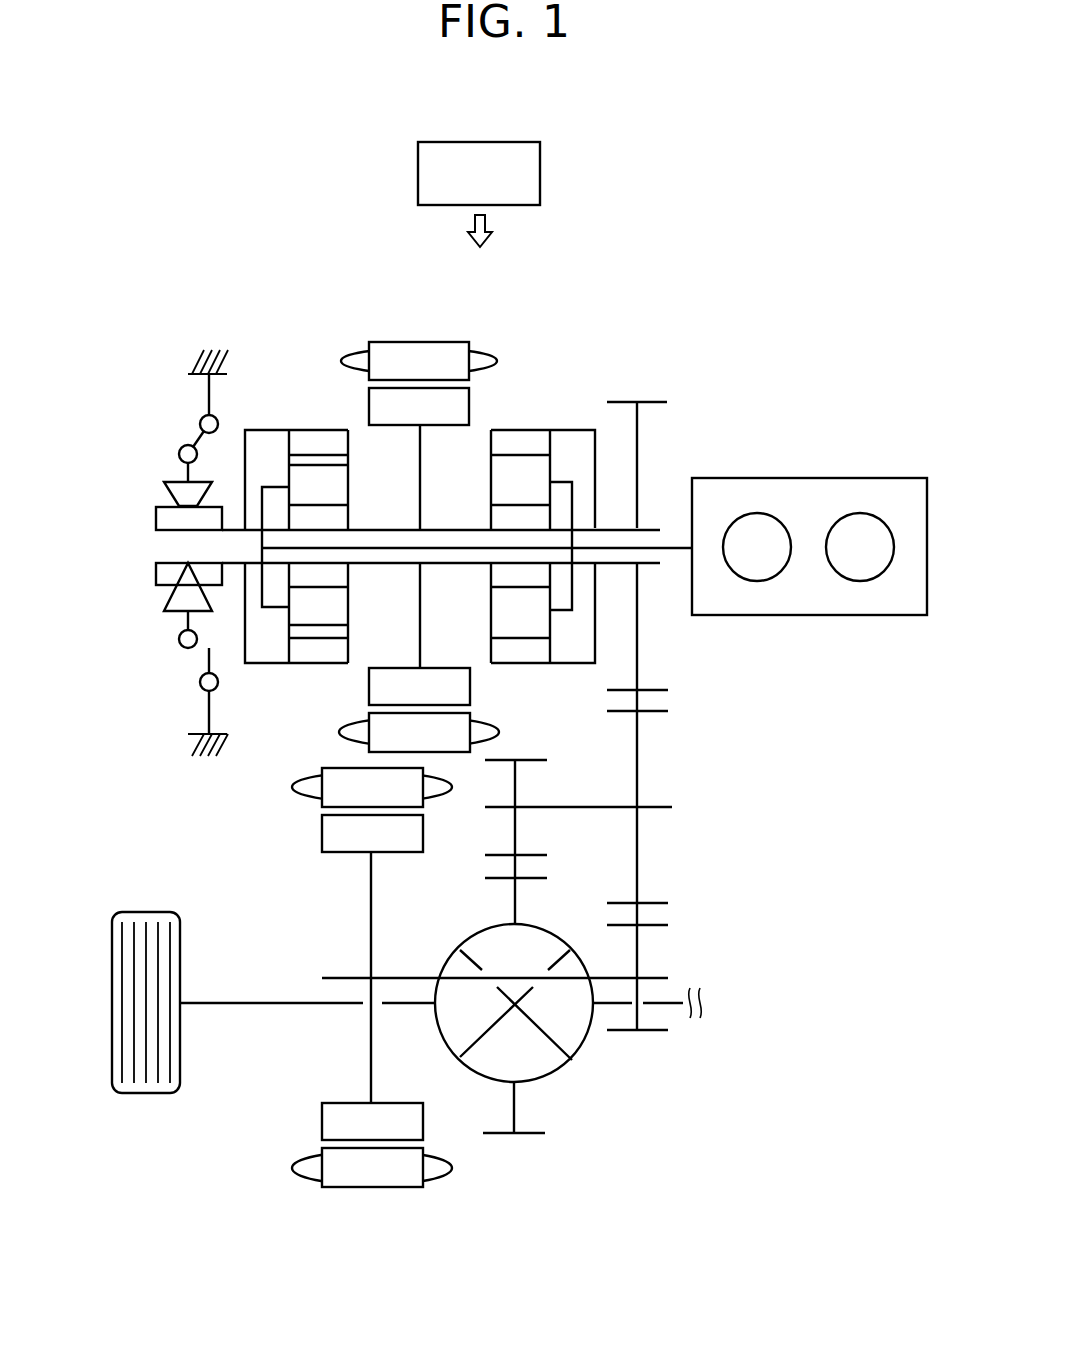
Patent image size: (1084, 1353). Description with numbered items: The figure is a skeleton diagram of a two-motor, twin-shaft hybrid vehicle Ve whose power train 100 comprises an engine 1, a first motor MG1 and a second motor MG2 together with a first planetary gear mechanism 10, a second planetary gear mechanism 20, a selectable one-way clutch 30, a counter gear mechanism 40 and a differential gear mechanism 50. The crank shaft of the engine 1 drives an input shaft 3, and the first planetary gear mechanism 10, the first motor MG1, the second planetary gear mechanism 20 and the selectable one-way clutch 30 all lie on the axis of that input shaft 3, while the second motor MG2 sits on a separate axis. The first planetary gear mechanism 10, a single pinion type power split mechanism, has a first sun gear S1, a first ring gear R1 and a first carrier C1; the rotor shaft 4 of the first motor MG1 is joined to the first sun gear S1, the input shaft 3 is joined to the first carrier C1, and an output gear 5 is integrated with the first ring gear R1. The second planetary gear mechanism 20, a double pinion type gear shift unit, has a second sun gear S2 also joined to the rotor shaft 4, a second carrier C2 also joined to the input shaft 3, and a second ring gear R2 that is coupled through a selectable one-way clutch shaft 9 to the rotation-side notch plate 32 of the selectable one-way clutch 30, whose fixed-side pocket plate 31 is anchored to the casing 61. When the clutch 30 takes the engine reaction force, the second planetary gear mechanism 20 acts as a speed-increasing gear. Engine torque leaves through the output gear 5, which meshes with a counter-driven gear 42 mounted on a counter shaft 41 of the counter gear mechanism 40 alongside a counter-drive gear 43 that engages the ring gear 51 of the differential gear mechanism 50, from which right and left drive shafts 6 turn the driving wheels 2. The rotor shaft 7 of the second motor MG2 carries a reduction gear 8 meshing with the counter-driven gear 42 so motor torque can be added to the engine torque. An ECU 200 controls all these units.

The ECU 200 is at (511, 142).
The power train 100 is at (629, 277).
The hybrid vehicle Ve is at (811, 304).
The first motor MG1 is at (416, 320).
The second motor MG2 is at (368, 1210).
The engine 1 is at (848, 478).
The driving wheels 2 is at (142, 1093).
The input shaft 3 is at (675, 549).
The rotor shaft 4 is at (448, 528).
The output gear 5 is at (653, 690).
The drive shafts 6 is at (253, 1003).
The rotor shaft 7 is at (405, 978).
The reduction gear 8 is at (650, 925).
The selectable one-way clutch shaft 9 is at (244, 645).
The first planetary gear mechanism 10 is at (512, 484).
The second planetary gear mechanism 20 is at (325, 524).
The selectable one-way clutch 30 is at (154, 528).
The pocket plate 31 is at (205, 722).
The notch plate 32 is at (156, 576).
The counter gear mechanism 40 is at (631, 818).
The counter shaft 41 is at (583, 807).
The counter-driven gear 42 is at (652, 711).
The counter-drive gear 43 is at (530, 855).
The differential gear mechanism 50 is at (579, 1078).
The ring gear of the differential gear mechanism 51 is at (530, 878).
The casing 61 is at (209, 352).
The first carrier C1 is at (560, 478).
The second carrier C2 is at (274, 487).
The first ring gear R1 is at (510, 445).
The second ring gear R2 is at (313, 443).
The first sun gear S1 is at (502, 574).
The second sun gear S2 is at (336, 519).